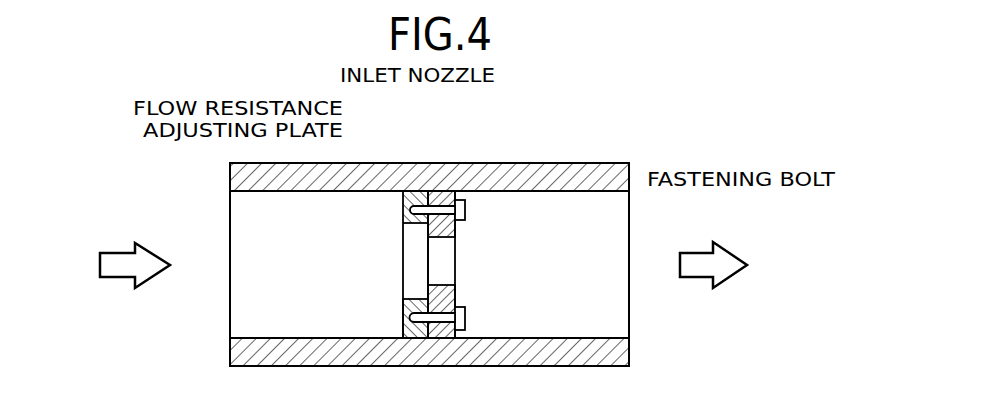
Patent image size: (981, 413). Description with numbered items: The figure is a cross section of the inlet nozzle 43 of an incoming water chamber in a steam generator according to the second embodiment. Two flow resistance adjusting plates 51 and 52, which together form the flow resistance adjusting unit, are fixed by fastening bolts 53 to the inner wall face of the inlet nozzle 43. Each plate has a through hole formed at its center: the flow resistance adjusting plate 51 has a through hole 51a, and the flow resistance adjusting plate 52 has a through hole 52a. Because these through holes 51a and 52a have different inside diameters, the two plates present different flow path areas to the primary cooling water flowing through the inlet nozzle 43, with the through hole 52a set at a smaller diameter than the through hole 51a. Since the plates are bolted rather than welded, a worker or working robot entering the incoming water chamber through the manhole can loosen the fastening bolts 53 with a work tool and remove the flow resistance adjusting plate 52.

The inlet nozzle 43 is at (443, 191).
The flow resistance adjusting plate 51 is at (403, 201).
The through hole 51a is at (418, 306).
The flow resistance adjusting plate 52 is at (447, 191).
The through hole 52a is at (452, 286).
The fastening bolt 53 is at (468, 211).